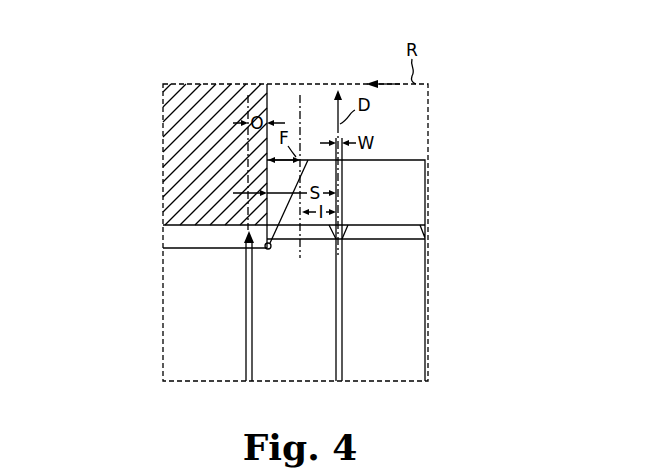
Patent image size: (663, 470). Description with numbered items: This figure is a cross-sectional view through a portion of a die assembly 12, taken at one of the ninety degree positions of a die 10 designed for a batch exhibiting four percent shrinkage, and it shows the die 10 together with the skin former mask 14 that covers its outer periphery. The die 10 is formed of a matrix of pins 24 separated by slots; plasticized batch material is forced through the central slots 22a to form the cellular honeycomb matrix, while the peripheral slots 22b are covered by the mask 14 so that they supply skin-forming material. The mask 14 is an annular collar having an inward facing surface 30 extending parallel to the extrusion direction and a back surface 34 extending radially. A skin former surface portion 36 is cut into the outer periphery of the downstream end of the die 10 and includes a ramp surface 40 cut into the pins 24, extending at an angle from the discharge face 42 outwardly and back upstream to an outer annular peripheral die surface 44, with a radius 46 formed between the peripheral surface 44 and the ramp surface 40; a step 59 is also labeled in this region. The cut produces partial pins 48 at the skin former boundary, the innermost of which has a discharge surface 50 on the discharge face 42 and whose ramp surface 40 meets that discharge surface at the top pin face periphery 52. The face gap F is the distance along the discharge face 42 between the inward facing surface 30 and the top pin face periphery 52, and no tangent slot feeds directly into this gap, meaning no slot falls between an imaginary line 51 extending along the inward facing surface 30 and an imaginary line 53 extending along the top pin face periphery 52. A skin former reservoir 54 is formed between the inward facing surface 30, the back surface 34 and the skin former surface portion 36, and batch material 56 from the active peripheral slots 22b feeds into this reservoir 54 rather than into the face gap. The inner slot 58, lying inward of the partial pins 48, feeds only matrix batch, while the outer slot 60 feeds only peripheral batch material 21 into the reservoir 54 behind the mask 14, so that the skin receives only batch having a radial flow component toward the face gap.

The die 10 is at (484, 223).
The die assembly 12 is at (38, 161).
The skin former mask 14 is at (183, 123).
The peripheral batch material 21 is at (253, 313).
The central slots 22a is at (342, 340).
The peripheral slots 22b is at (247, 345).
The pins 24 is at (407, 177).
The inward facing surface 30 is at (267, 97).
The back surface 34 is at (203, 227).
The skin former surface portion 36 is at (183, 240).
The ramp surface 40 is at (247, 248).
The discharge face 42 is at (378, 160).
The outer annular peripheral die surface 44 is at (248, 258).
The radius 46 is at (268, 247).
The partial pins 48 is at (312, 165).
The discharge surface 50 is at (332, 120).
The imaginary line 51 is at (268, 304).
The top pin face periphery 52 is at (308, 160).
The imaginary line 53 is at (308, 237).
The skin former reservoir 54 is at (188, 227).
The batch material 56 is at (227, 227).
The inner slot 58 is at (342, 360).
The step 59 is at (343, 268).
The outer slot 60 is at (247, 362).